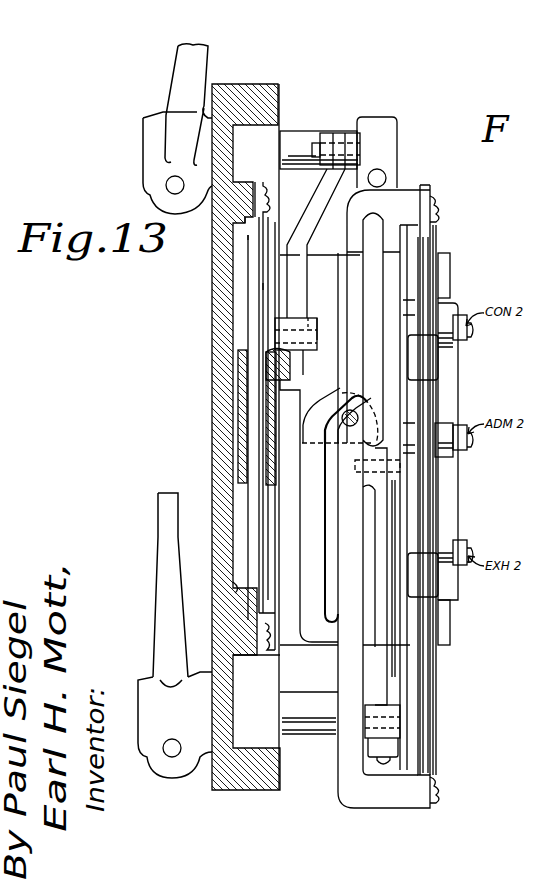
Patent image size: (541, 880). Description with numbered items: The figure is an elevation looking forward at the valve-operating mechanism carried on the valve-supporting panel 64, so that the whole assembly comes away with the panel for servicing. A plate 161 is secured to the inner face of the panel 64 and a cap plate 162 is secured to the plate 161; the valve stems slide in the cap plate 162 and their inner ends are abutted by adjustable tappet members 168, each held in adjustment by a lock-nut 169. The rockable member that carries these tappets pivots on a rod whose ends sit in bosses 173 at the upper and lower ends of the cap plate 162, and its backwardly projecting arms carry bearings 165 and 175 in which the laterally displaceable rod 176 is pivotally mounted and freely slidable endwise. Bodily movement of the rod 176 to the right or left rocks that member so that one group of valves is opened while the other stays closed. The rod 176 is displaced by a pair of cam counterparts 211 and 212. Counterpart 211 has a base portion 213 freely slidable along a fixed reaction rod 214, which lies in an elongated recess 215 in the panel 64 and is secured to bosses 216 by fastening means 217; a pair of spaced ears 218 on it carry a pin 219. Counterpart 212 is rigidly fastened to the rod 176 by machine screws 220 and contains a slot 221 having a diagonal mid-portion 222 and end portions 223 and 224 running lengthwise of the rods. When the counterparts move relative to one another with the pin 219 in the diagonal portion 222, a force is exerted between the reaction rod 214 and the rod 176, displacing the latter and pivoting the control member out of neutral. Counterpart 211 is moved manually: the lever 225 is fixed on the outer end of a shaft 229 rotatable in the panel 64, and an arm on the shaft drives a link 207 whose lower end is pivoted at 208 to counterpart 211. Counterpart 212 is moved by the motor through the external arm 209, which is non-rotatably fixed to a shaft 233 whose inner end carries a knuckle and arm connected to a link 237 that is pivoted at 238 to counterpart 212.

The valve-supporting panel 64 is at (214, 341).
The plate 161 is at (455, 398).
The cap plate 162 is at (398, 500).
The bearing 165 is at (440, 378).
The adjustable tappet member 168 is at (473, 338).
The lock-nut 169 is at (458, 348).
The boss 173 is at (450, 275).
The bearing 175 is at (432, 590).
The rod 176 is at (434, 676).
The link 207 is at (322, 208).
The pivotal connection 208 is at (312, 318).
The arm 209 is at (162, 628).
The cam means counterpart 211 is at (328, 376).
The cam means counterpart 212 is at (346, 318).
The base portion 213 is at (243, 420).
The reaction rod 214 is at (260, 287).
The elongated recess 215 is at (240, 262).
The boss 216 is at (245, 216).
The fastening means 217 is at (272, 198).
The spaced ears 218 is at (342, 423).
The pin 219 is at (348, 408).
The machine screw 220 is at (438, 204).
The slot 221 is at (358, 341).
The diagonal mid-portion 222 is at (370, 422).
The end portion 223 is at (326, 632).
The end portion 224 is at (365, 273).
The manually operated lever 225 is at (180, 58).
The shaft 229 is at (300, 134).
The shaft 233 is at (320, 700).
The link 237 is at (382, 524).
The pivotal connection 238 is at (440, 466).